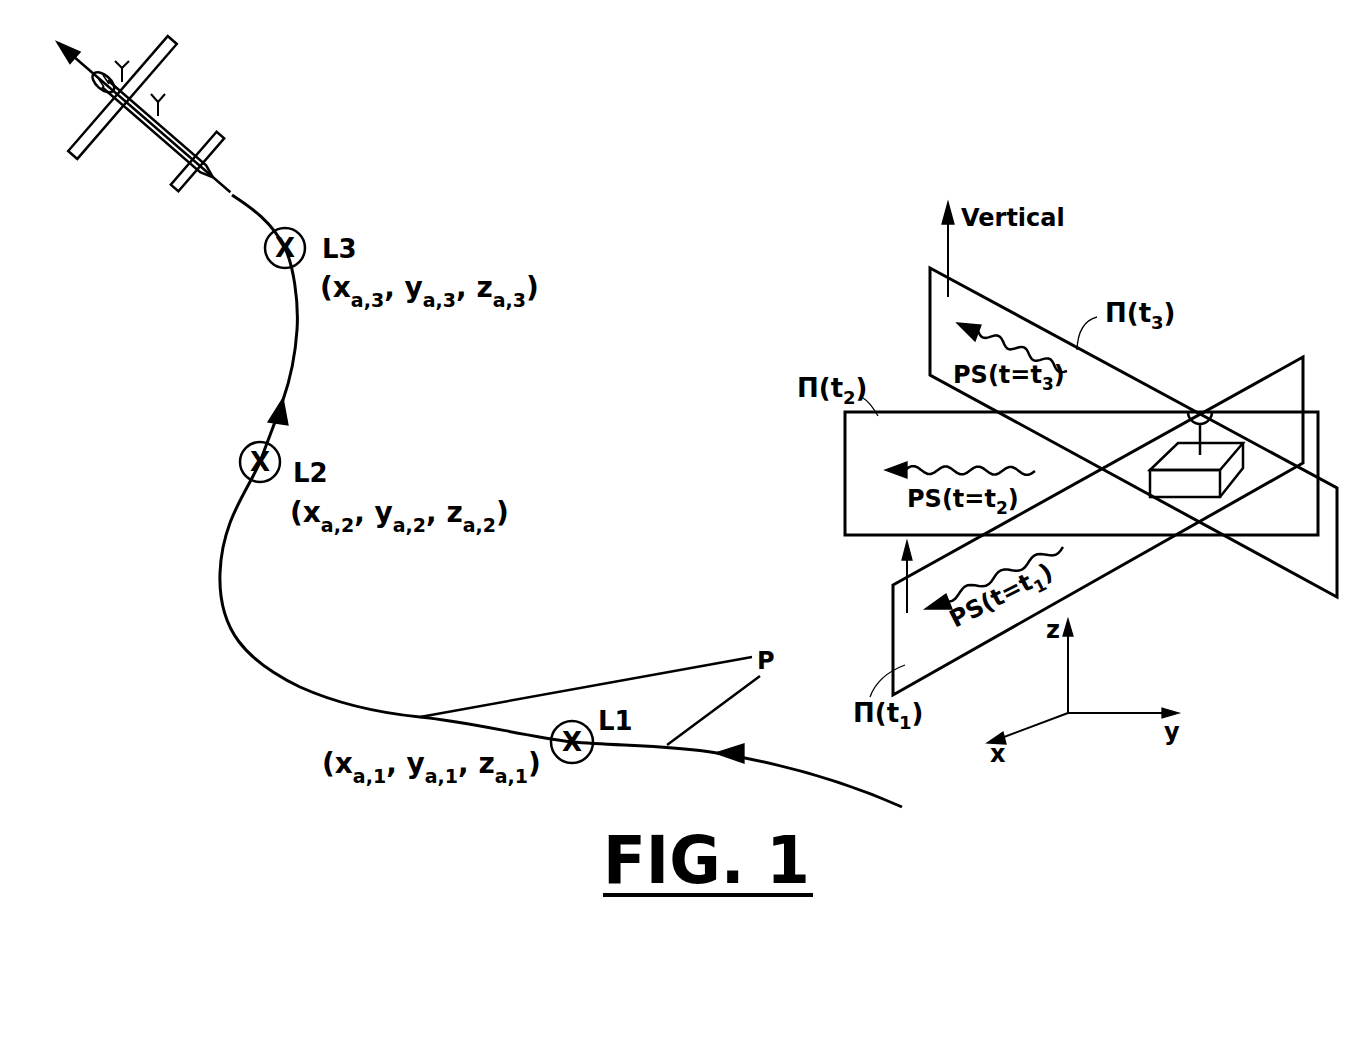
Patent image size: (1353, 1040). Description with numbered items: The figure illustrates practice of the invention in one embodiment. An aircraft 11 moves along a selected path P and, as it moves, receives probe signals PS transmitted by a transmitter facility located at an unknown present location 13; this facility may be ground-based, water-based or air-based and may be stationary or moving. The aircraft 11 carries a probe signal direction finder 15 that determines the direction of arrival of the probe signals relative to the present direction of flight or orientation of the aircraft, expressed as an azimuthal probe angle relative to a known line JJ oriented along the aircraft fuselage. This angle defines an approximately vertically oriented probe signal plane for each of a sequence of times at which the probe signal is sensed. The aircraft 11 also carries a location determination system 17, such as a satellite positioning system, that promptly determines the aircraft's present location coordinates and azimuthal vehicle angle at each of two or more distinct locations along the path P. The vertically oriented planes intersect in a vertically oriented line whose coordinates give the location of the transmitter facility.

The aircraft 11 is at (159, 127).
The unknown present location 13 is at (1203, 512).
The probe signal direction finder 15 is at (124, 114).
The location determination system 17 is at (130, 165).